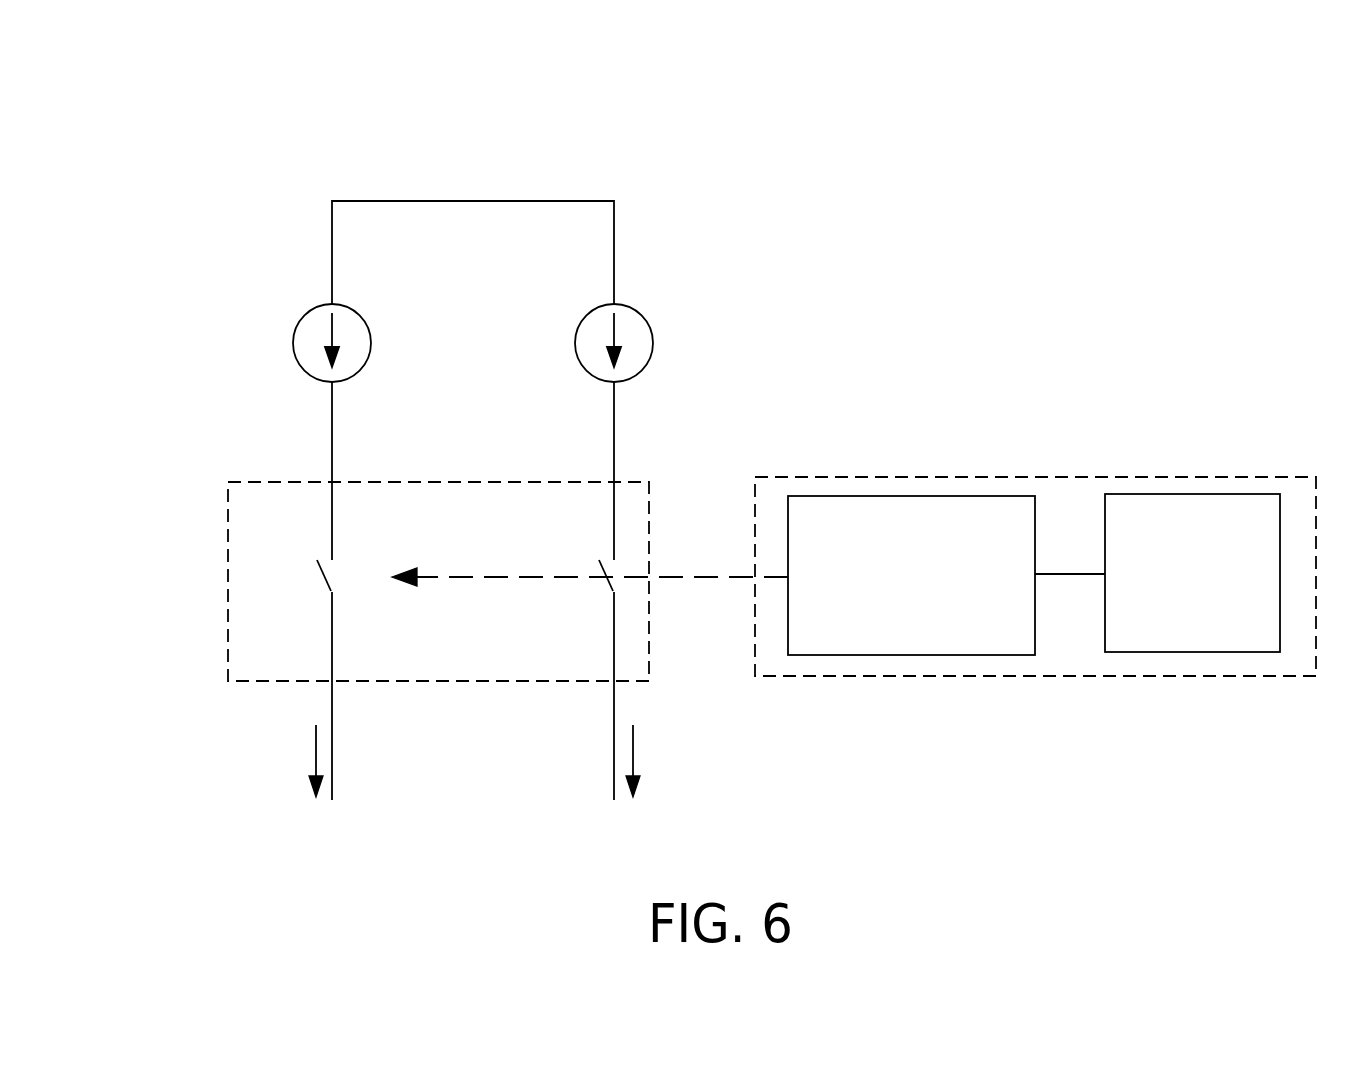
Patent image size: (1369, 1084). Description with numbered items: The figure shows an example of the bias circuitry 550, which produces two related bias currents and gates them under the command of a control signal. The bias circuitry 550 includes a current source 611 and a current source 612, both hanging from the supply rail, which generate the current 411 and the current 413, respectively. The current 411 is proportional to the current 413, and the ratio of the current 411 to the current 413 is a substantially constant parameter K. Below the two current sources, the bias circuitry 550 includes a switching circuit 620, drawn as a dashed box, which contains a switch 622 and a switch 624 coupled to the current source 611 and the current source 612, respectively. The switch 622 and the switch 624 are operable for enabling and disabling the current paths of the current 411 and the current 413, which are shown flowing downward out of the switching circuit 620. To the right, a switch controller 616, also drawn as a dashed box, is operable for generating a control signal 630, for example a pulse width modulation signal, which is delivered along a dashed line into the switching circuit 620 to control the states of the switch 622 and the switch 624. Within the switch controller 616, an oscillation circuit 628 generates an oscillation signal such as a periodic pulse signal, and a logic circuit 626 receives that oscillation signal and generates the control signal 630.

The bias circuitry 550 is at (200, 163).
The current source 611 is at (318, 306).
The current source 612 is at (600, 307).
The switching circuit 620 is at (228, 550).
The switch 622 is at (330, 594).
The switch 624 is at (612, 594).
The control signal 630 is at (663, 577).
The switch controller 616 is at (1192, 477).
The logic circuit 626 is at (940, 634).
The oscillation circuit 628 is at (1220, 609).
The current 411 is at (316, 775).
The current 413 is at (633, 770).